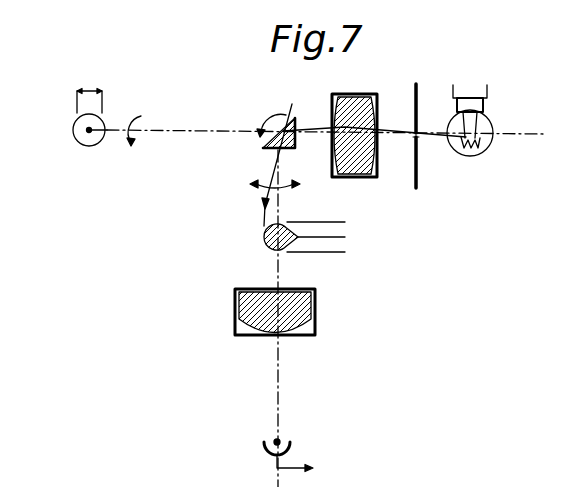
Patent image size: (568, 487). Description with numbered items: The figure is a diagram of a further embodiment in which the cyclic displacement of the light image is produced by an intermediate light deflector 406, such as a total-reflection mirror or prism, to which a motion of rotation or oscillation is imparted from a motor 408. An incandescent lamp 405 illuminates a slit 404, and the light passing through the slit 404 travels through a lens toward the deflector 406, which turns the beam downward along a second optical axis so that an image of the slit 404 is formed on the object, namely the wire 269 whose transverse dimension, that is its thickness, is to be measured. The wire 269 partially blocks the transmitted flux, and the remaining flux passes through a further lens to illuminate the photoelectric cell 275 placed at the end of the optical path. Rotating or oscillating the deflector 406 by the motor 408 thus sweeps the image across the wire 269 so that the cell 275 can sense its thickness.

The motor 408 is at (83, 139).
The intermediate light deflector 406 is at (280, 156).
The slit 404 is at (417, 168).
The incandescent lamp 405 is at (494, 150).
The wire 269 is at (264, 240).
The photoelectric cell 275 is at (263, 447).